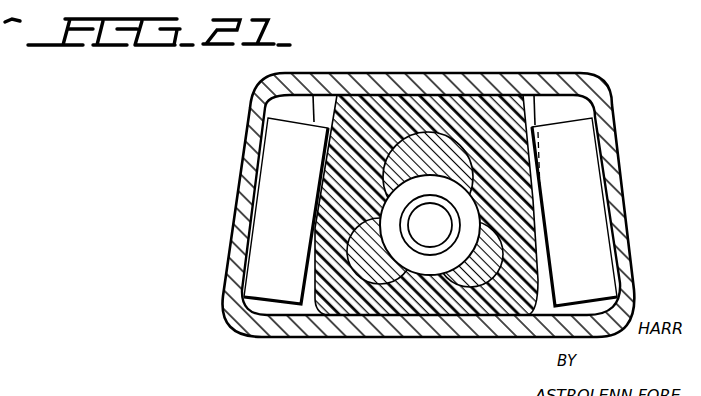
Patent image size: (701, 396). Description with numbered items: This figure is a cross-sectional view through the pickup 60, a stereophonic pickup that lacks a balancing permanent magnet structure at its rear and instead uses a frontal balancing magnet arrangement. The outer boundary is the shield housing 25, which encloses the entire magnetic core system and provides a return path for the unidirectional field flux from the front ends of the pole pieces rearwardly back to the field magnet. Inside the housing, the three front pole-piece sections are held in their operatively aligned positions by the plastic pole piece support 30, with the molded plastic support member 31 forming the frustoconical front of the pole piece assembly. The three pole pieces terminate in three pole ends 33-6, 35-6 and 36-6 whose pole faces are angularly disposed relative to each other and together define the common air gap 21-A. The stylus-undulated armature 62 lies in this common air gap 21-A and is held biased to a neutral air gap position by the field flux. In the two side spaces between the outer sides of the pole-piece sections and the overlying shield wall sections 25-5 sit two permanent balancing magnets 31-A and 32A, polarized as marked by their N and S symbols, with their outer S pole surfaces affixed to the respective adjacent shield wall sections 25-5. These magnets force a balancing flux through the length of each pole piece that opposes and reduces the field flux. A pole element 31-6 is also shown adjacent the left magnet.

The pickup 60 is at (495, 70).
The shield housing 25 is at (249, 108).
The shield wall sections 25-5 is at (245, 163).
The pole piece support 30 is at (446, 93).
The plastic support member 31 is at (425, 106).
The stator pole piece 31-6 is at (330, 102).
The balancing magnet 31-A is at (258, 256).
The balancing magnet 32A is at (580, 143).
The pole end 33-6 is at (404, 134).
The pole end 35-6 is at (378, 267).
The pole end 36-6 is at (468, 293).
The common air gap 21-A is at (460, 245).
The armature 62 is at (487, 211).